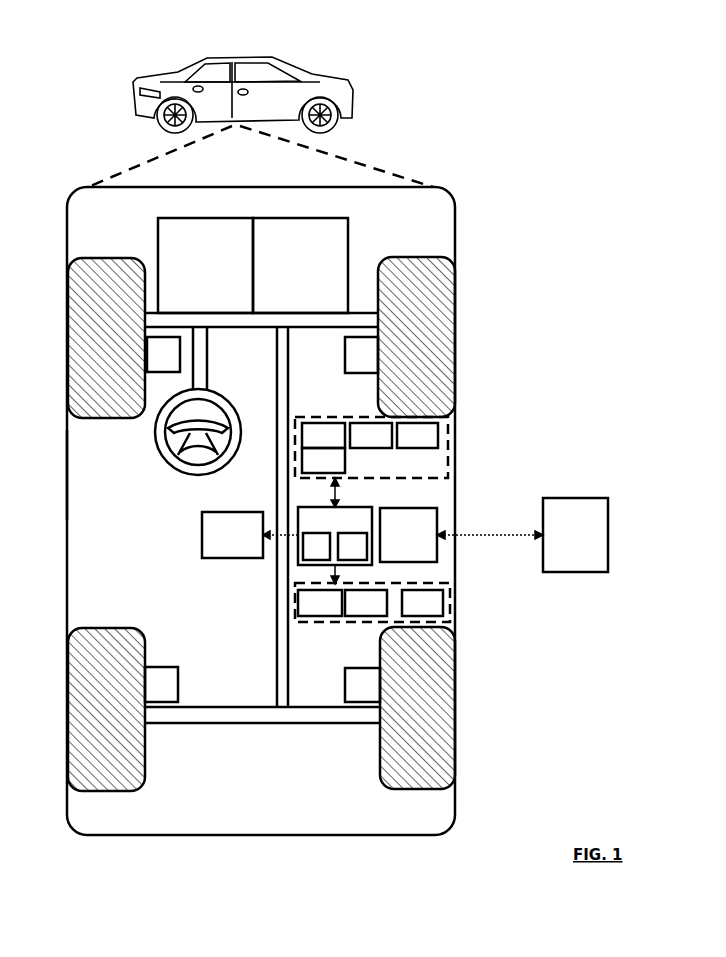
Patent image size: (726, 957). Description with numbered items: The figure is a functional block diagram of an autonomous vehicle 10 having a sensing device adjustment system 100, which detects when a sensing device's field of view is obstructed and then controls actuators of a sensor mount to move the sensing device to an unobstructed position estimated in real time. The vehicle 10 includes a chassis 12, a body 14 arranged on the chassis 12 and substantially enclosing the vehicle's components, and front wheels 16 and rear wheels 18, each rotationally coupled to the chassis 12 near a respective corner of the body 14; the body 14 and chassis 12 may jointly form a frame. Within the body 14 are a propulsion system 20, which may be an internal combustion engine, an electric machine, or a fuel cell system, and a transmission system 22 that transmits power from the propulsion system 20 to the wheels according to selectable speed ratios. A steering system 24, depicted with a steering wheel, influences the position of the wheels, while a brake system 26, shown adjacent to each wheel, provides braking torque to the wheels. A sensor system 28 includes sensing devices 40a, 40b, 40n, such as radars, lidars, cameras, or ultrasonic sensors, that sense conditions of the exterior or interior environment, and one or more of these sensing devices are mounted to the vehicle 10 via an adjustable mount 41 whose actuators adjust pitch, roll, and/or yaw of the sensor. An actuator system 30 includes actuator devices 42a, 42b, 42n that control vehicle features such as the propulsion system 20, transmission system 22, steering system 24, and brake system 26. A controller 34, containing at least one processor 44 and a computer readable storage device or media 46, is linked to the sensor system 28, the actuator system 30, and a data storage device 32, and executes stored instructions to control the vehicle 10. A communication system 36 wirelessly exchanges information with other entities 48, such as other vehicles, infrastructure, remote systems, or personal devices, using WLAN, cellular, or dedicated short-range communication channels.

The vehicle 10 is at (132, 104).
The system for adjusting a position of a sensing device 100 is at (473, 200).
The chassis 12 is at (277, 622).
The body 14 is at (67, 498).
The front wheels 16 is at (107, 259).
The rear wheels 18 is at (120, 791).
The propulsion system 20 is at (205, 265).
The transmission system 22 is at (300, 265).
The steering system 24 is at (221, 346).
The brake system 26 is at (262, 519).
The sensor system 28 is at (372, 417).
The actuator system 30 is at (318, 623).
The data storage device 32 is at (232, 535).
The controller 34 is at (335, 536).
The communication system 36 is at (408, 535).
The sensing device 40a is at (323, 435).
The sensing device 40b is at (371, 435).
The sensing device 40n is at (417, 435).
The adjustable mount 41 is at (323, 460).
The actuator device 42a is at (320, 603).
The actuator device 42b is at (366, 603).
The actuator device 42n is at (422, 603).
The processor 44 is at (316, 546).
The computer readable storage device or media 46 is at (352, 546).
The other entities 48 is at (575, 535).